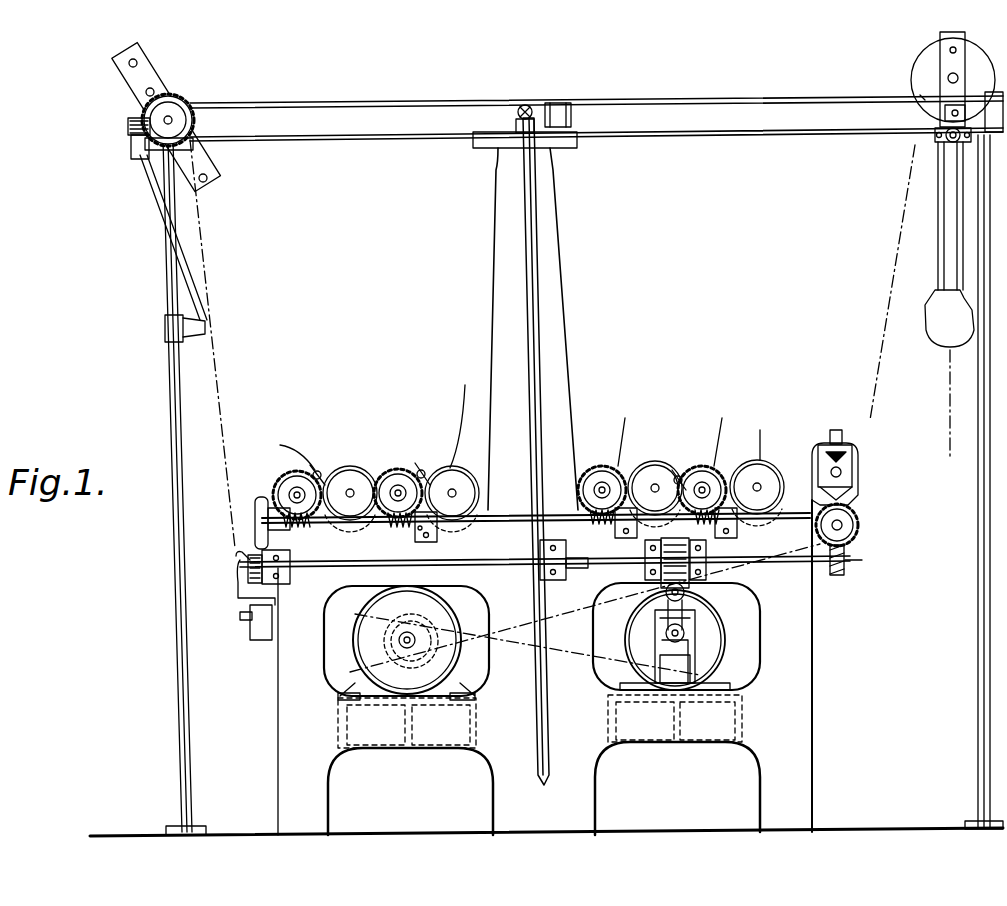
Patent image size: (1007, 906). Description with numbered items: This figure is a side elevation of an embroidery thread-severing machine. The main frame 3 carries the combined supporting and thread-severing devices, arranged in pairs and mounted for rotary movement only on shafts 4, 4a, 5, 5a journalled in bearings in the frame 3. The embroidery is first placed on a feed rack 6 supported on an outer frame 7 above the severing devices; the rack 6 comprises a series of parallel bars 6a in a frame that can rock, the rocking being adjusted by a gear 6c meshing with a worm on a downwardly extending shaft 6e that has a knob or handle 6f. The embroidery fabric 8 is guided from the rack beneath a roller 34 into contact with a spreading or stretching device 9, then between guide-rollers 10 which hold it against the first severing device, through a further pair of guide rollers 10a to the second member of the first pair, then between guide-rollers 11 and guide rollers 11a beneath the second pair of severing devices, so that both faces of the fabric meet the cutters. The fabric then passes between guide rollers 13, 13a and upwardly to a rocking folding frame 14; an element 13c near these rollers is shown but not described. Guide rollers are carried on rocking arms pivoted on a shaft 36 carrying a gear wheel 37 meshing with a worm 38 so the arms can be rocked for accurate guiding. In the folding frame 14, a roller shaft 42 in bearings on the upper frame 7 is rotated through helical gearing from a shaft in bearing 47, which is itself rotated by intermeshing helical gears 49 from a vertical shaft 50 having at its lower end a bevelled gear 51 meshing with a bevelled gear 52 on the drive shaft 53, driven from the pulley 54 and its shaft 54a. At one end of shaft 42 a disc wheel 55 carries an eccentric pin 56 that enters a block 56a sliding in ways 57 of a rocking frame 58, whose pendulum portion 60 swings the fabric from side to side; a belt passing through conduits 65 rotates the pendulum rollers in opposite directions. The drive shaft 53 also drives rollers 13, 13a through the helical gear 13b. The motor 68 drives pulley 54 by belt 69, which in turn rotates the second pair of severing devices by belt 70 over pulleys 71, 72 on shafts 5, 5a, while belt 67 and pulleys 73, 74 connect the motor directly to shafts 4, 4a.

The main frame 3 is at (812, 646).
The shaft 4 is at (355, 490).
The shaft 4a is at (468, 492).
The shaft 5 is at (663, 485).
The shaft 5a is at (772, 484).
The feed rack 6 is at (132, 82).
The parallel bars 6a is at (150, 75).
The gear 6c is at (192, 108).
The shaft 6e is at (160, 203).
The knob or handle 6f is at (206, 328).
The outer frame 7 is at (170, 390).
The embroidery fabric 8 is at (226, 398).
The spreading or stretching device 9 is at (247, 570).
The guide-rollers 10 is at (282, 446).
The guide rollers 10a is at (422, 468).
The guide-rollers 11 is at (672, 468).
The guide rollers 11a is at (725, 423).
The guide roller 13 is at (858, 478).
The guide roller 13a is at (858, 522).
The helical gear 13b is at (846, 562).
The shaft 13c is at (860, 545).
The rocking folding frame 14 is at (955, 212).
The roller 34 is at (240, 556).
The shaft 36 is at (258, 515).
The gear wheel 37 is at (275, 478).
The worm 38 is at (298, 524).
The shaft 42 is at (947, 78).
The bearing 47 is at (555, 122).
The helical gears 49 is at (525, 104).
The vertical shaft 50 is at (536, 357).
The bevelled gear 51 is at (530, 565).
The bevelled gear 52 is at (645, 565).
The drive shaft 53 is at (395, 524).
The pulley 54 is at (690, 625).
The shaft 54a is at (685, 640).
The disc wheel 55 is at (925, 97).
The pin 56 is at (940, 148).
The block 56a is at (948, 110).
The ways 57 is at (950, 45).
The rocking frame 58 is at (935, 88).
The pendulum portion 60 is at (948, 325).
The conduits 65 is at (938, 285).
The belt 67 is at (355, 585).
The motor 68 is at (345, 655).
The belt 69 is at (512, 650).
The belt 70 is at (718, 628).
The pulley 71 is at (635, 428).
The pulley 72 is at (758, 430).
The pulley 73 is at (338, 468).
The pulley 74 is at (466, 392).